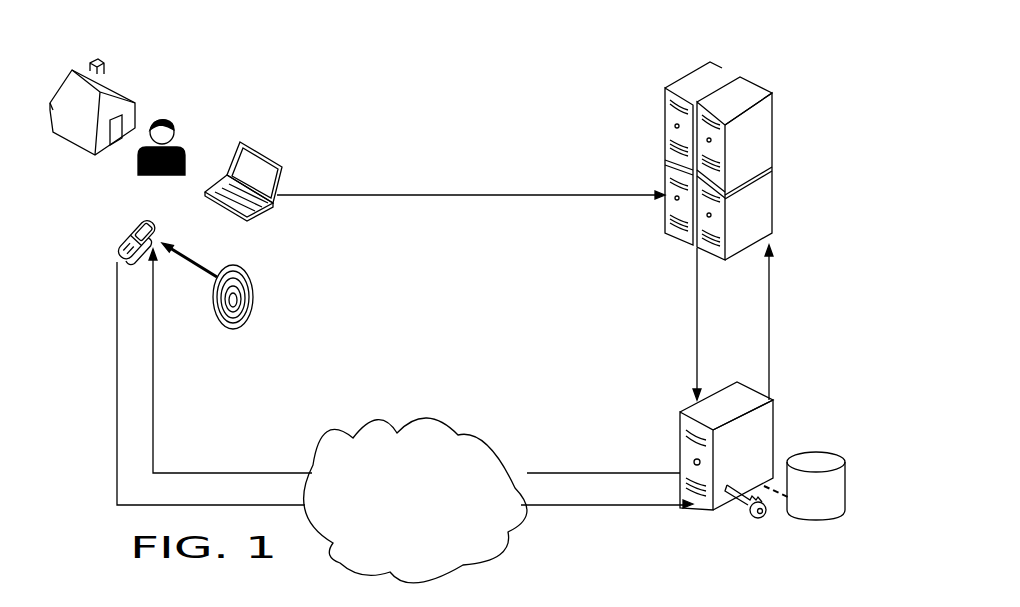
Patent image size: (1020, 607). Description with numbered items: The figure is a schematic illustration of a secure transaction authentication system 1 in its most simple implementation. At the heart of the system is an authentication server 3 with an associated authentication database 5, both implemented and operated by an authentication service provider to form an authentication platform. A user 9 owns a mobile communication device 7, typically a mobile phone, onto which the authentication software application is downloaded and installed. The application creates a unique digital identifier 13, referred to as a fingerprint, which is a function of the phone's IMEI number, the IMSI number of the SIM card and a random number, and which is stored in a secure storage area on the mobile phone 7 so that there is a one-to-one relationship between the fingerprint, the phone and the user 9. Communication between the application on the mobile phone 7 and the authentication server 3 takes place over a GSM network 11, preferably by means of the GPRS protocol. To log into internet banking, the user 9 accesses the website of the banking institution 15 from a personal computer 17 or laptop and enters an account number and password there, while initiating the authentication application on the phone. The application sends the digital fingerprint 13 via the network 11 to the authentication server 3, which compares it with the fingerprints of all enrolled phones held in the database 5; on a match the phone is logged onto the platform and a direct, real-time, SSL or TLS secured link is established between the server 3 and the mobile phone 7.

The secure transaction authentication system 1 is at (399, 83).
The authentication server 3 is at (774, 440).
The authentication database 5 is at (822, 522).
The mobile communication device 7 is at (113, 255).
The user 9 is at (167, 122).
The GSM network 11 is at (411, 512).
The unique digital identifier 13 is at (253, 285).
The banking institution 15 is at (774, 132).
The personal computer 17 is at (263, 150).